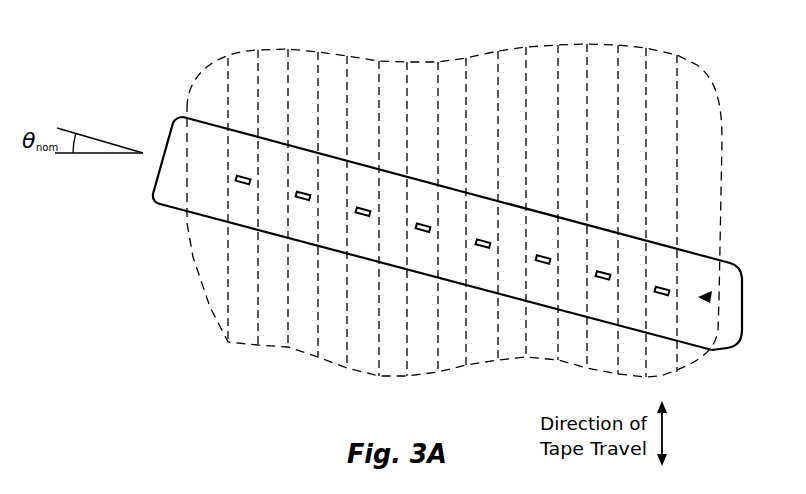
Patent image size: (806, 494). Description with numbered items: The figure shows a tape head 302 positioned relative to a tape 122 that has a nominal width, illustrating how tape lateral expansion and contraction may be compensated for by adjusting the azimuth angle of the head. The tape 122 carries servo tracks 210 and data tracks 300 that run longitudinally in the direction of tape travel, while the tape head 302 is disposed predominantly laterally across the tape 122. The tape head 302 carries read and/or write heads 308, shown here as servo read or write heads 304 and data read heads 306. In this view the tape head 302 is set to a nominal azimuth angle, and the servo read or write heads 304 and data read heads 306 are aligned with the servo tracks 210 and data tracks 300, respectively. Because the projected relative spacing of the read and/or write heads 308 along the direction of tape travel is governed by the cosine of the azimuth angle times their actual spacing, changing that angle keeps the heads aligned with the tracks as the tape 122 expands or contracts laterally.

The tape 122 is at (370, 62).
The servo tracks 210 is at (245, 328).
The data tracks 300 is at (303, 340).
The tape head 302 is at (175, 116).
The servo read or write heads 304 is at (245, 184).
The data read heads 306 is at (302, 196).
The read and/or write heads 308 is at (706, 298).